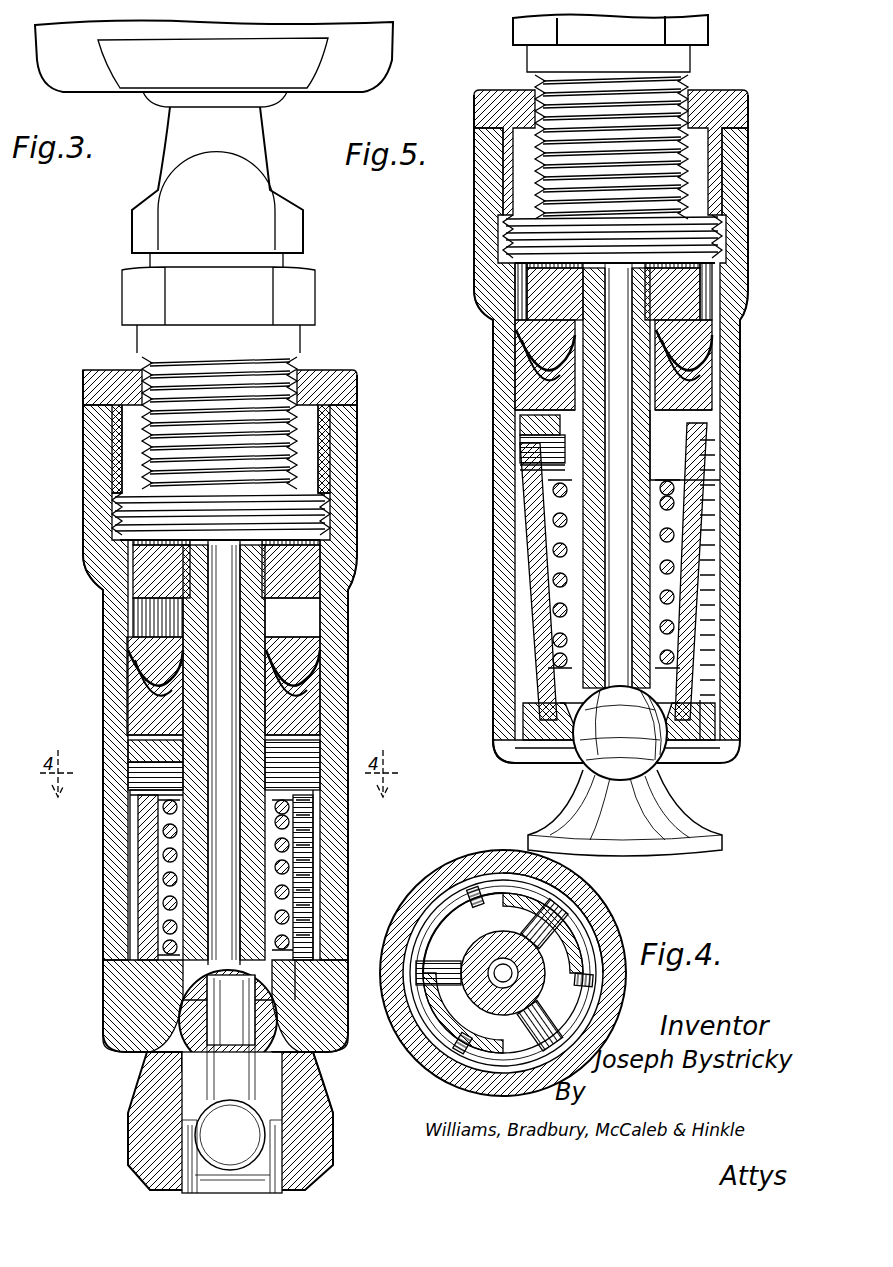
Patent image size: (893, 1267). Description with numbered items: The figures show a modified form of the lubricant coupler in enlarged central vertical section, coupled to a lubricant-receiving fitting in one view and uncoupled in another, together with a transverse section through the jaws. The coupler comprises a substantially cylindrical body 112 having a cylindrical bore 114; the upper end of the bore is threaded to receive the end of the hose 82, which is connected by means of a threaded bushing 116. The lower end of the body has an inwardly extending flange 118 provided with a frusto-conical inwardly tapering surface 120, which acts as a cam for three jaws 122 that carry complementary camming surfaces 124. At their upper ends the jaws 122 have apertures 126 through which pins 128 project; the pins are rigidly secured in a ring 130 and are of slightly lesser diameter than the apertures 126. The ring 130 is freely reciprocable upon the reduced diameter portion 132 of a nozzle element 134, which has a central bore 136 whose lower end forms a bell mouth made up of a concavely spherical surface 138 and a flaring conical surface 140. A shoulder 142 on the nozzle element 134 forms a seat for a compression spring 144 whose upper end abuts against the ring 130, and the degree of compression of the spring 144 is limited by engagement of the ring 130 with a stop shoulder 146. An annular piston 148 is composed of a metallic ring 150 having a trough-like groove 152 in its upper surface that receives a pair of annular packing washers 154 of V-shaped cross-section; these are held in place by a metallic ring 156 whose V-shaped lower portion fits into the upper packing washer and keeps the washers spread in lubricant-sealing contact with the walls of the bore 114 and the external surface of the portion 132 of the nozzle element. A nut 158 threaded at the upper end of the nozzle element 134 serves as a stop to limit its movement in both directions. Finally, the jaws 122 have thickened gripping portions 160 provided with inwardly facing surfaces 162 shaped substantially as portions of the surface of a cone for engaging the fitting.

In FIG. 3, the hose 82 is at (230, 145).
In FIG. 5, the hose 82 is at (712, 30).
In FIG. 3, the body 112 is at (350, 615).
In FIG. 5, the body 112 is at (505, 610).
In FIG. 4, the body 112 is at (610, 975).
In FIG. 3, the cylindrical bore 114 is at (305, 625).
In FIG. 5, the cylindrical bore 114 is at (710, 310).
In FIG. 4, the cylindrical bore 114 is at (507, 857).
In FIG. 3, the threaded bushing 116 is at (330, 372).
In FIG. 5, the threaded bushing 116 is at (733, 92).
In FIG. 3, the inwardly extending flange 118 is at (330, 1050).
In FIG. 5, the inwardly extending flange 118 is at (520, 755).
In FIG. 3, the frusto-conical inwardly tapering surface 120 is at (310, 1052).
In FIG. 5, the frusto-conical inwardly tapering surface 120 is at (535, 745).
In FIG. 3, the jaws 122 is at (150, 870).
In FIG. 5, the jaws 122 is at (535, 640).
In FIG. 4, the jaws 122 is at (550, 937).
In FIG. 3, the camming surfaces 124 is at (300, 1000).
In FIG. 5, the camming surfaces 124 is at (705, 745).
In FIG. 3, the apertures 126 is at (140, 795).
In FIG. 5, the apertures 126 is at (540, 490).
In FIG. 4, the apertures 126 is at (500, 1062).
In FIG. 3, the pins 128 is at (145, 770).
In FIG. 5, the pins 128 is at (545, 470).
In FIG. 4, the pins 128 is at (440, 900).
In FIG. 3, the ring 130 is at (128, 760).
In FIG. 5, the ring 130 is at (540, 460).
In FIG. 4, the ring 130 is at (580, 970).
In FIG. 3, the reduced diameter portion 132 is at (262, 748).
In FIG. 5, the reduced diameter portion 132 is at (655, 460).
In FIG. 3, the nozzle element 134 is at (255, 825).
In FIG. 5, the nozzle element 134 is at (650, 550).
In FIG. 4, the nozzle element 134 is at (540, 920).
In FIG. 3, the central bore 136 is at (215, 880).
In FIG. 5, the central bore 136 is at (607, 573).
In FIG. 4, the central bore 136 is at (515, 960).
In FIG. 3, the concavely spherical surface 138 is at (195, 945).
In FIG. 5, the concavely spherical surface 138 is at (580, 700).
In FIG. 3, the flaring conical surface 140 is at (195, 970).
In FIG. 5, the flaring conical surface 140 is at (575, 720).
In FIG. 3, the shoulder 142 is at (175, 910).
In FIG. 5, the shoulder 142 is at (570, 685).
In FIG. 3, the compression spring 144 is at (165, 845).
In FIG. 5, the compression spring 144 is at (565, 550).
In FIG. 3, the stop shoulder 146 is at (160, 815).
In FIG. 5, the stop shoulder 146 is at (580, 520).
In FIG. 3, the annular piston 148 is at (305, 690).
In FIG. 5, the annular piston 148 is at (715, 385).
In FIG. 3, the metallic ring 150 is at (135, 710).
In FIG. 5, the metallic ring 150 is at (530, 420).
In FIG. 3, the trough-like groove 152 is at (150, 690).
In FIG. 5, the trough-like groove 152 is at (560, 390).
In FIG. 3, the annular packing washers 154 is at (140, 665).
In FIG. 5, the annular packing washers 154 is at (555, 370).
In FIG. 3, the metallic ring 156 is at (135, 640).
In FIG. 5, the metallic ring 156 is at (540, 330).
In FIG. 3, the nut 158 is at (300, 565).
In FIG. 5, the nut 158 is at (695, 295).
In FIG. 3, the thickened gripping portions 160 is at (180, 1010).
In FIG. 5, the thickened gripping portions 160 is at (690, 740).
In FIG. 3, the inwardly facing surfaces 162 is at (200, 1060).
In FIG. 5, the inwardly facing surfaces 162 is at (700, 715).